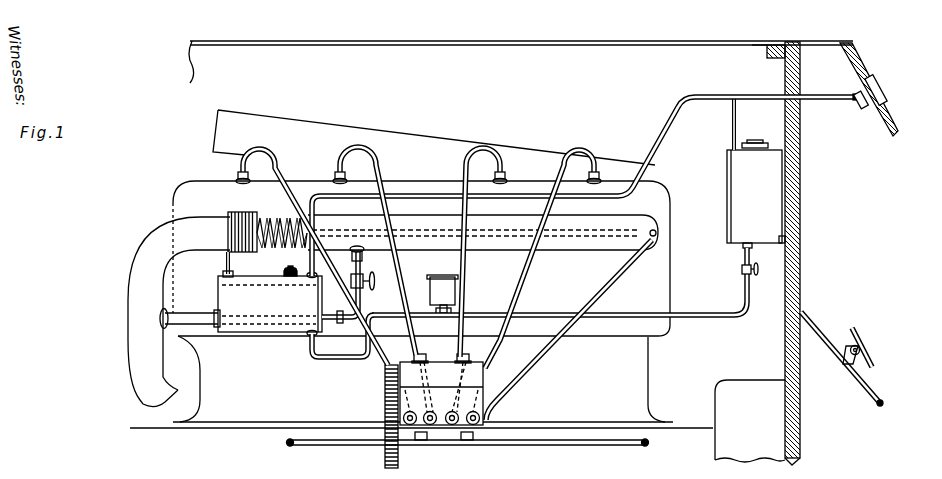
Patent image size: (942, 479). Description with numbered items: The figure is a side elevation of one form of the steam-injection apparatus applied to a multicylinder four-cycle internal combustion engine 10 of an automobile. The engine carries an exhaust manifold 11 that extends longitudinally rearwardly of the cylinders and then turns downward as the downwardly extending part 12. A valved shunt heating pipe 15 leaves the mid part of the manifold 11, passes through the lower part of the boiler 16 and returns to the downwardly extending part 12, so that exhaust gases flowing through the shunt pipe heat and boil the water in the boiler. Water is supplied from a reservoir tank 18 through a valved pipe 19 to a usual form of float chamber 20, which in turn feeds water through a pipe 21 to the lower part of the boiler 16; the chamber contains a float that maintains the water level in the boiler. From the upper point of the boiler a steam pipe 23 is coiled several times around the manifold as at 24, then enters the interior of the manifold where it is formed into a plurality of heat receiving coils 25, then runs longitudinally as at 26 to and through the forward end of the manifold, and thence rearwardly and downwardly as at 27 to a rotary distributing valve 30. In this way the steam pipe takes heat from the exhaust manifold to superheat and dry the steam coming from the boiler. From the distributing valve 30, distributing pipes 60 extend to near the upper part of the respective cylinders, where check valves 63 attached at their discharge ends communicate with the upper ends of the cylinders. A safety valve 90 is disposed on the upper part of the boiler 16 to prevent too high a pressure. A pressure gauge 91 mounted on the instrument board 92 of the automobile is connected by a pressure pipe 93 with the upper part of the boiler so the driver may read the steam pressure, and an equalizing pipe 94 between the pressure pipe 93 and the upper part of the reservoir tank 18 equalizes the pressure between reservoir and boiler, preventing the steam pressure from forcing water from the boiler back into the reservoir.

The internal combustion engine 10 is at (672, 258).
The exhaust manifold 11 is at (497, 251).
The downwardly extending part of the manifold 12 is at (128, 300).
The valved shunt heating pipe 15 is at (197, 315).
The boiler 16 is at (270, 304).
The reservoir tank 18 is at (756, 194).
The valved pipe 19 is at (707, 317).
The float chamber 20 is at (442, 295).
The pipe 21 is at (325, 359).
The steam pipe 23 is at (232, 262).
The coils around the manifold 24 is at (228, 232).
The heat receiving coils 25 is at (268, 216).
The longitudinal portion of the steam pipe 26 is at (422, 232).
The rearwardly and downwardly extending portion of the steam pipe 27 is at (550, 357).
The rotary distributing valve 30 is at (434, 411).
The distributing pipes 60 is at (276, 160).
The check valves 63 is at (237, 177).
The safety valve 90 is at (287, 263).
The pressure gauge 91 is at (876, 89).
The instrument board 92 is at (887, 114).
The pressure pipe 93 is at (686, 94).
The equalizing pipe 94 is at (738, 120).